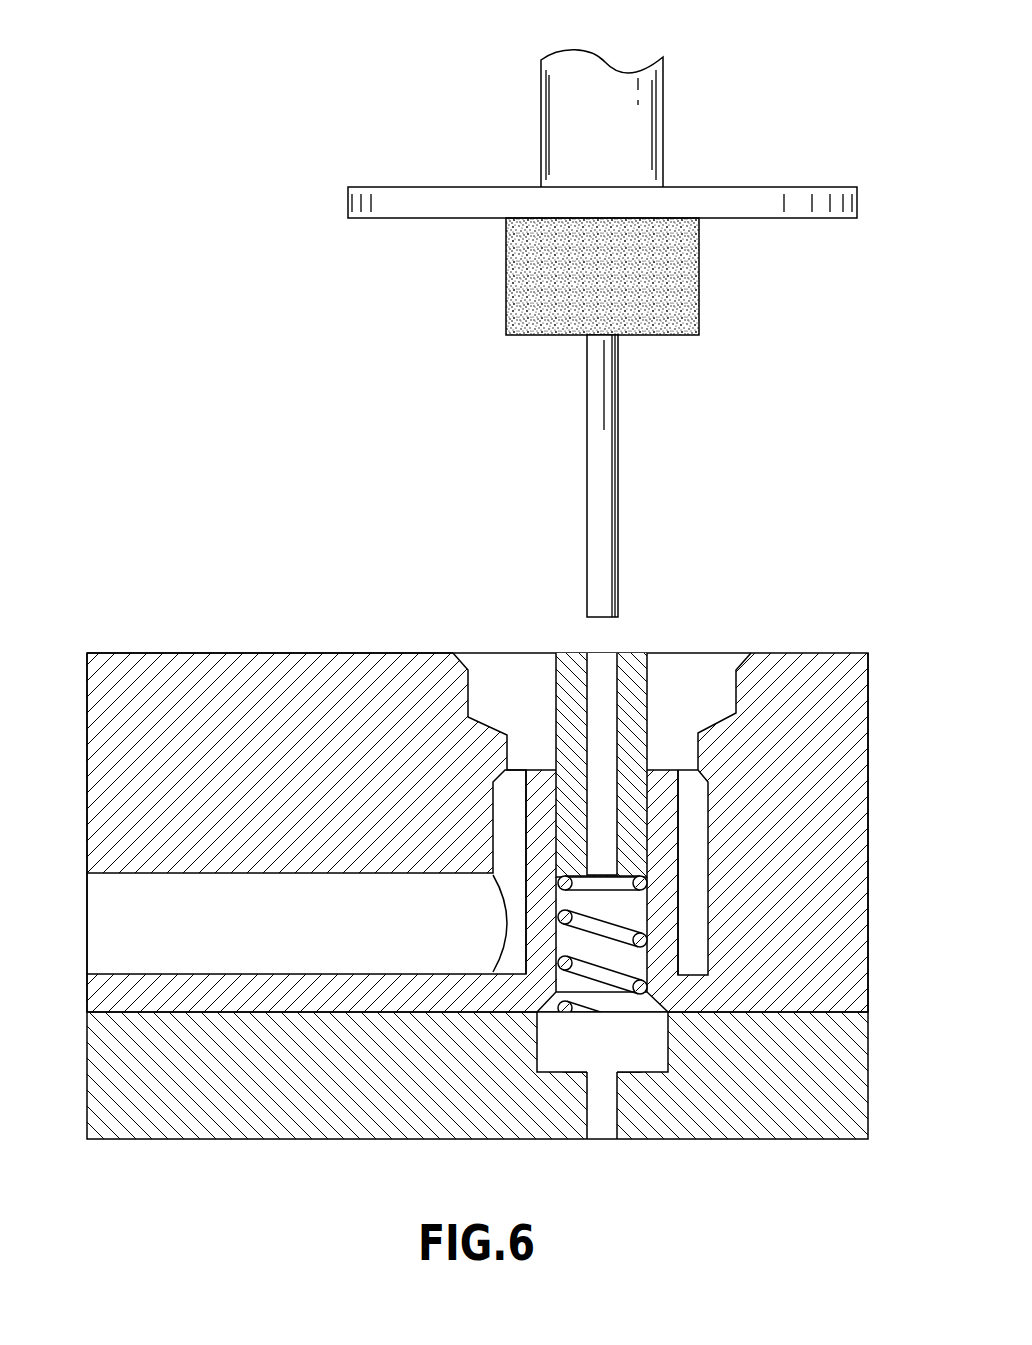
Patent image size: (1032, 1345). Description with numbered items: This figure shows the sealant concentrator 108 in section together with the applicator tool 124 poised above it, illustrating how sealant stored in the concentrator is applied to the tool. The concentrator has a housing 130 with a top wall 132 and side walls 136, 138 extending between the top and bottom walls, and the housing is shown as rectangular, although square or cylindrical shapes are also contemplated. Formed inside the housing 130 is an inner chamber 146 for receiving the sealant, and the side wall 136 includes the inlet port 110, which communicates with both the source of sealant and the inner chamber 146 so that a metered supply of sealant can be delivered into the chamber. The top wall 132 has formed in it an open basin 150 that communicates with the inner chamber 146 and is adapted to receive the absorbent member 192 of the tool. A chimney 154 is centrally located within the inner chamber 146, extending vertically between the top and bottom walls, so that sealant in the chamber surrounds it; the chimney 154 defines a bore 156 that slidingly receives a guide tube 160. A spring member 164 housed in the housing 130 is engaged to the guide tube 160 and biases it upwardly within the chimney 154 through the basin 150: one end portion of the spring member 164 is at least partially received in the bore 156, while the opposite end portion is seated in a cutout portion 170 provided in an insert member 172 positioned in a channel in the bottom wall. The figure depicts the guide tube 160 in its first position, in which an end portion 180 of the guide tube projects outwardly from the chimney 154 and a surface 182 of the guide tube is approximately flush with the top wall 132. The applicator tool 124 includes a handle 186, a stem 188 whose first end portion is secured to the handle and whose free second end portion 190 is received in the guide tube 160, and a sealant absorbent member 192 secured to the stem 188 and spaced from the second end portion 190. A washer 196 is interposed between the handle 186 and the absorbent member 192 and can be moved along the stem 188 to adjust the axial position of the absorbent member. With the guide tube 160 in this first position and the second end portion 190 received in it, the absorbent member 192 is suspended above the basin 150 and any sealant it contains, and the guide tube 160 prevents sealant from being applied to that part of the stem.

The concentrator 108 is at (218, 590).
The inlet port 110 is at (110, 924).
The applicator tool 124 is at (808, 80).
The housing 130 is at (157, 663).
The top wall 132 is at (305, 653).
The side wall 136 is at (87, 765).
The side wall 138 is at (868, 893).
The inner chamber 146 is at (695, 868).
The open basin 150 is at (700, 707).
The chimney 154 is at (712, 805).
The bore 156 is at (627, 912).
The guide tube 160 is at (555, 692).
The spring member 164 is at (618, 1035).
The cutout portion 170 is at (540, 1073).
The insert member 172 is at (773, 1127).
The end portion 180 is at (630, 680).
The surface 182 is at (573, 652).
The handle 186 is at (565, 93).
The stem 188 is at (587, 450).
The second end portion 190 is at (602, 559).
The sealant absorbent member 192 is at (505, 293).
The washer 196 is at (430, 207).